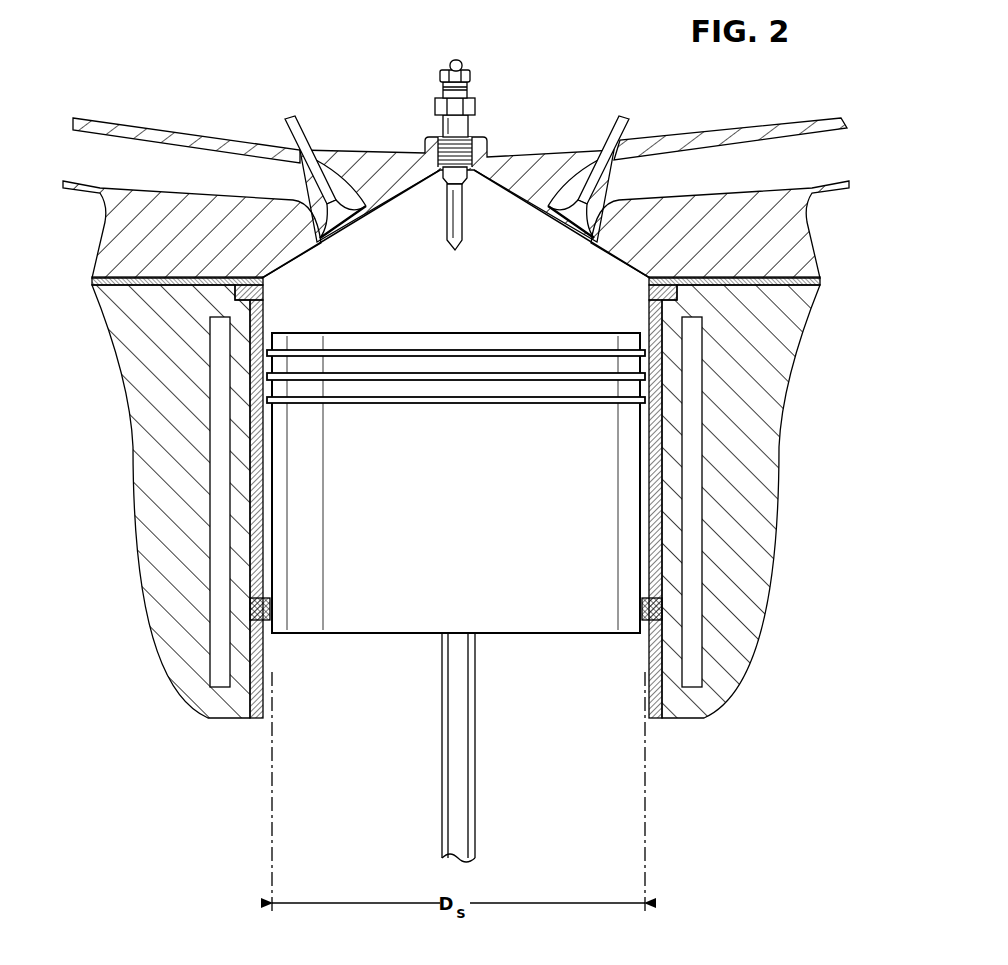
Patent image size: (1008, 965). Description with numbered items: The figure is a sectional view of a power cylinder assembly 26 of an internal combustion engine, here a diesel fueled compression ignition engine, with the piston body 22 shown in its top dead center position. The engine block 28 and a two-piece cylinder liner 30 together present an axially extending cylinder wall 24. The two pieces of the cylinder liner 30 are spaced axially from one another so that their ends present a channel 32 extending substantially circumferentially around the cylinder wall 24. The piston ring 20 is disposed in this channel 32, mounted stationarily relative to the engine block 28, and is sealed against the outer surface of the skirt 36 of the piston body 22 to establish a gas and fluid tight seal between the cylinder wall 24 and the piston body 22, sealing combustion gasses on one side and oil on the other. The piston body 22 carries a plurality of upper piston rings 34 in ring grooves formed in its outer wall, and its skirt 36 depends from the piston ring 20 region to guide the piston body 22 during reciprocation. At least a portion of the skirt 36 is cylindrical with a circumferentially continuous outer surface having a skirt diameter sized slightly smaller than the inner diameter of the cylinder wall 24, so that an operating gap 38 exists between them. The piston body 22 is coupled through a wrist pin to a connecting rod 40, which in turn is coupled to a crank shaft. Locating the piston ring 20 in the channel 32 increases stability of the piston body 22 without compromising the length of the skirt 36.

The piston ring 20 is at (456, 506).
The piston body 22 is at (456, 515).
The cylinder wall 24 is at (266, 648).
The power cylinder assembly 26 is at (654, 100).
The engine block 28 is at (768, 470).
The cylinder liner 30 is at (658, 540).
The channel 32 is at (650, 628).
The upper piston rings 34 is at (518, 353).
The skirt 36 is at (395, 605).
The operating gap 38 is at (268, 507).
The connecting rod 40 is at (452, 822).